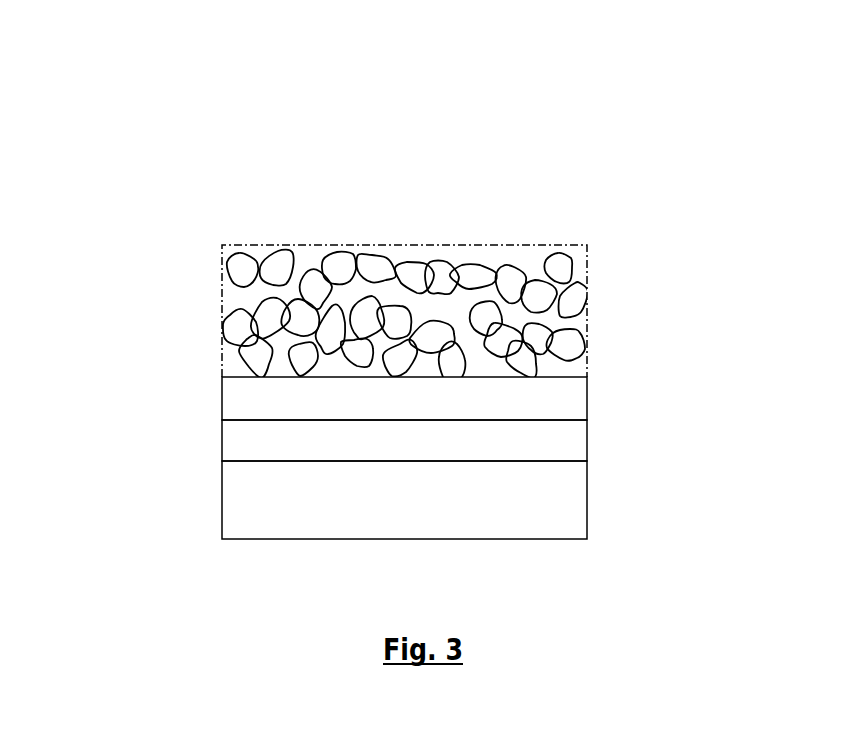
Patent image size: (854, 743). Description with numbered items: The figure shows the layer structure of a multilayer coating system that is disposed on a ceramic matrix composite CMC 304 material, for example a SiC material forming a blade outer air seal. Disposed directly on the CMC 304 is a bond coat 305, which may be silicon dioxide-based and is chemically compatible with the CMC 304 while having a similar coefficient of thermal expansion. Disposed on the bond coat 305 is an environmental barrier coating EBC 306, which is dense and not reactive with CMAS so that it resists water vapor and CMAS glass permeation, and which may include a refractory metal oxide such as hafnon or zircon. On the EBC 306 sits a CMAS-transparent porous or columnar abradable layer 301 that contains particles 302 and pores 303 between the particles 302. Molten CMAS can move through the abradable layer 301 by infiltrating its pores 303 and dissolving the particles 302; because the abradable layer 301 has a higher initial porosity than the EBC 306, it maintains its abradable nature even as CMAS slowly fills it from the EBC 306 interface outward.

The abradable layer 301 is at (404, 243).
The particles 302 is at (260, 353).
The pores 303 is at (523, 320).
The ceramic matrix composite (CMC) 304 is at (594, 498).
The bond coat 305 is at (594, 440).
The environmental barrier coating (EBC) 306 is at (594, 399).